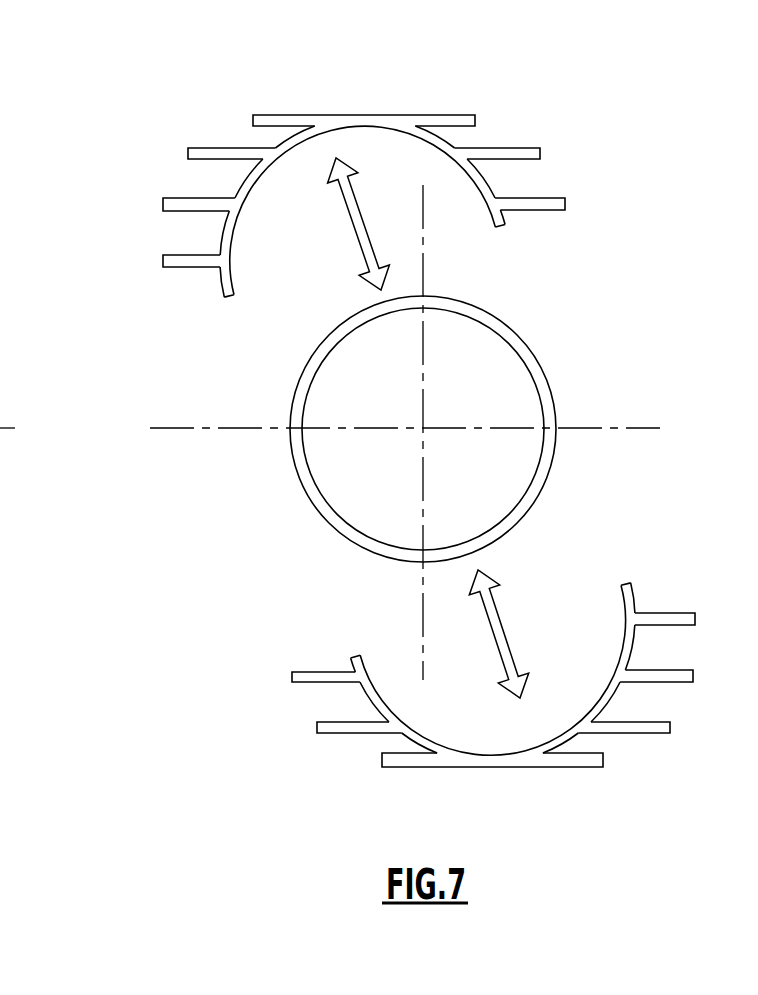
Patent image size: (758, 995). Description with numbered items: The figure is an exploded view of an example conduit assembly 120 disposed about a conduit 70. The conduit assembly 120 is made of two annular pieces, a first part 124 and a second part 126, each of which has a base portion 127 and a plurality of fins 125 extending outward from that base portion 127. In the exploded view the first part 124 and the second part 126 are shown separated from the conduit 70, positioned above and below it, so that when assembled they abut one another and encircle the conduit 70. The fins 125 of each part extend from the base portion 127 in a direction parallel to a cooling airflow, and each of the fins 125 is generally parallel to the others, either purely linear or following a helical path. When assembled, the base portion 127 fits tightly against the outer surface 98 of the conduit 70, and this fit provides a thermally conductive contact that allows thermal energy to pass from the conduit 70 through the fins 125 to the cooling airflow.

The conduit 70 is at (278, 398).
The outer surface 98 is at (296, 500).
The conduit assembly 120 is at (420, 454).
The first part 124 is at (452, 142).
The fins 125 is at (172, 143).
The second part 126 is at (418, 738).
The base portion 127 is at (486, 455).